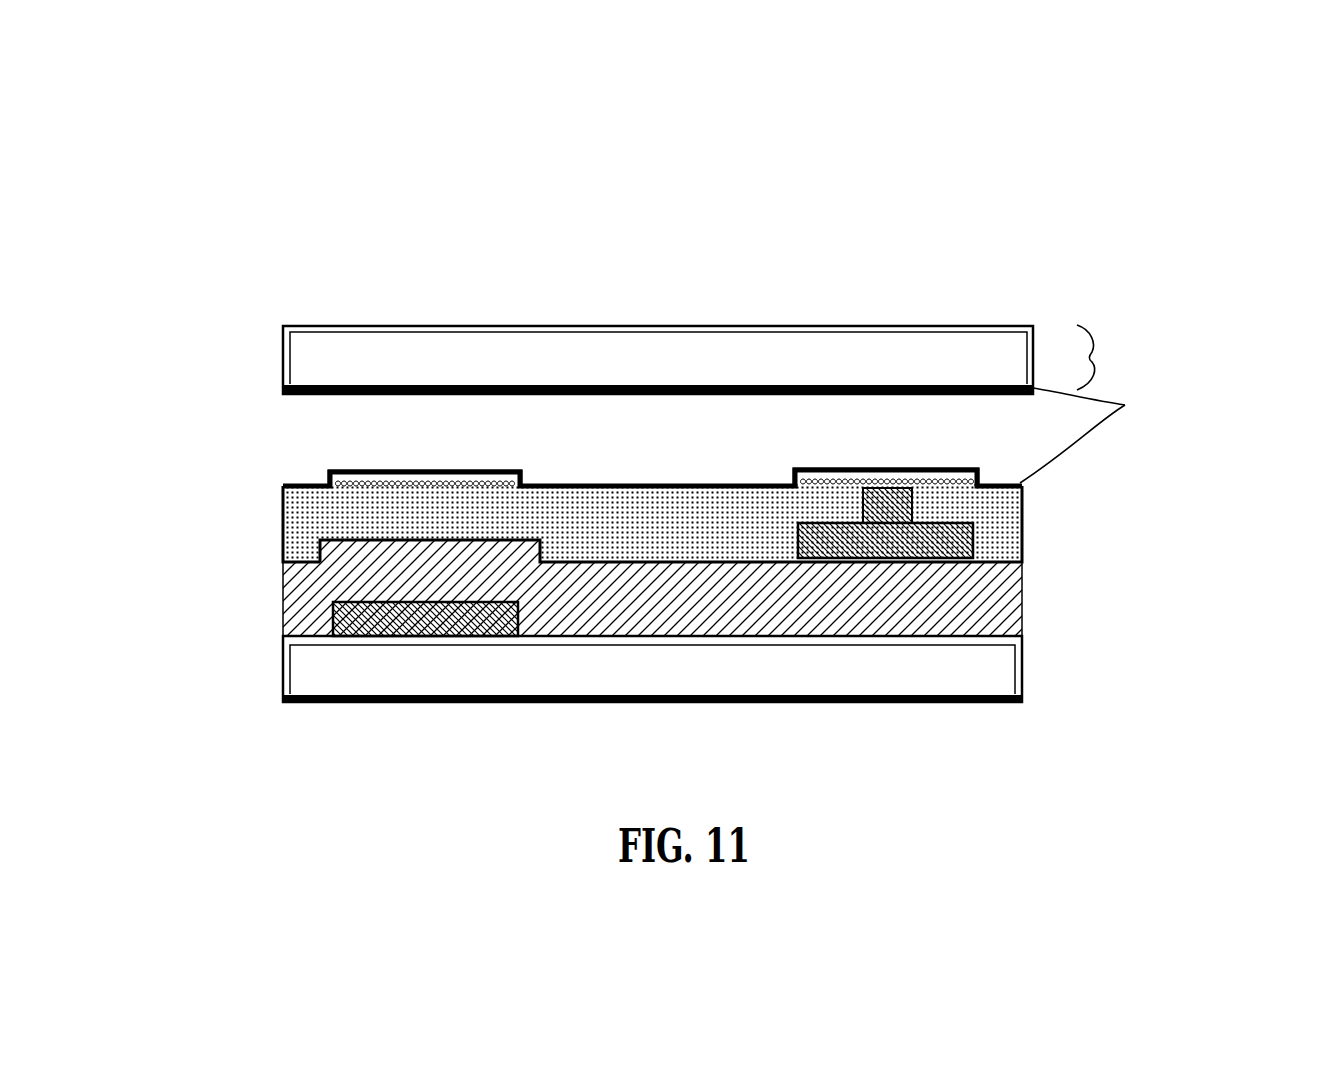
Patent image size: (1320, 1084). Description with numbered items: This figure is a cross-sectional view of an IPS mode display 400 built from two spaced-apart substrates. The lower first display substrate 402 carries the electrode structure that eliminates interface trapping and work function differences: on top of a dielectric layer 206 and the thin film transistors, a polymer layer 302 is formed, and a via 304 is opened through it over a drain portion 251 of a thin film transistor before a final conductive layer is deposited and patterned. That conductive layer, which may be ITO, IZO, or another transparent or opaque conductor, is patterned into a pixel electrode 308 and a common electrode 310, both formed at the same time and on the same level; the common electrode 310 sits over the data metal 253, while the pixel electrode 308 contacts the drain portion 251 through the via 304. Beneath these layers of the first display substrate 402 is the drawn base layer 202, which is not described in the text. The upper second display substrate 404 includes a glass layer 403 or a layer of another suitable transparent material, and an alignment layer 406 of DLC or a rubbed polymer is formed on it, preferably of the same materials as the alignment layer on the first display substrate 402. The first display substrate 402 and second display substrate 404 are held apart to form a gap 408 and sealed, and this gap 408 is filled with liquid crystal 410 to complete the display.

The IPS mode display 400 is at (1045, 283).
The first display substrate 402 is at (1188, 480).
The glass layer 403 is at (680, 340).
The second display substrate 404 is at (1092, 358).
The alignment layer 406 is at (1091, 430).
The gap 408 is at (255, 488).
The liquid crystal 410 is at (670, 454).
The via 304 is at (1022, 500).
The common electrode 310 is at (475, 472).
The pixel electrode 308 is at (925, 470).
The polymer layer 302 is at (1022, 553).
The drain portion 251 is at (1022, 535).
The data metal 253 is at (428, 626).
The dielectric layer 206 is at (1000, 600).
The substrate 202 is at (932, 685).